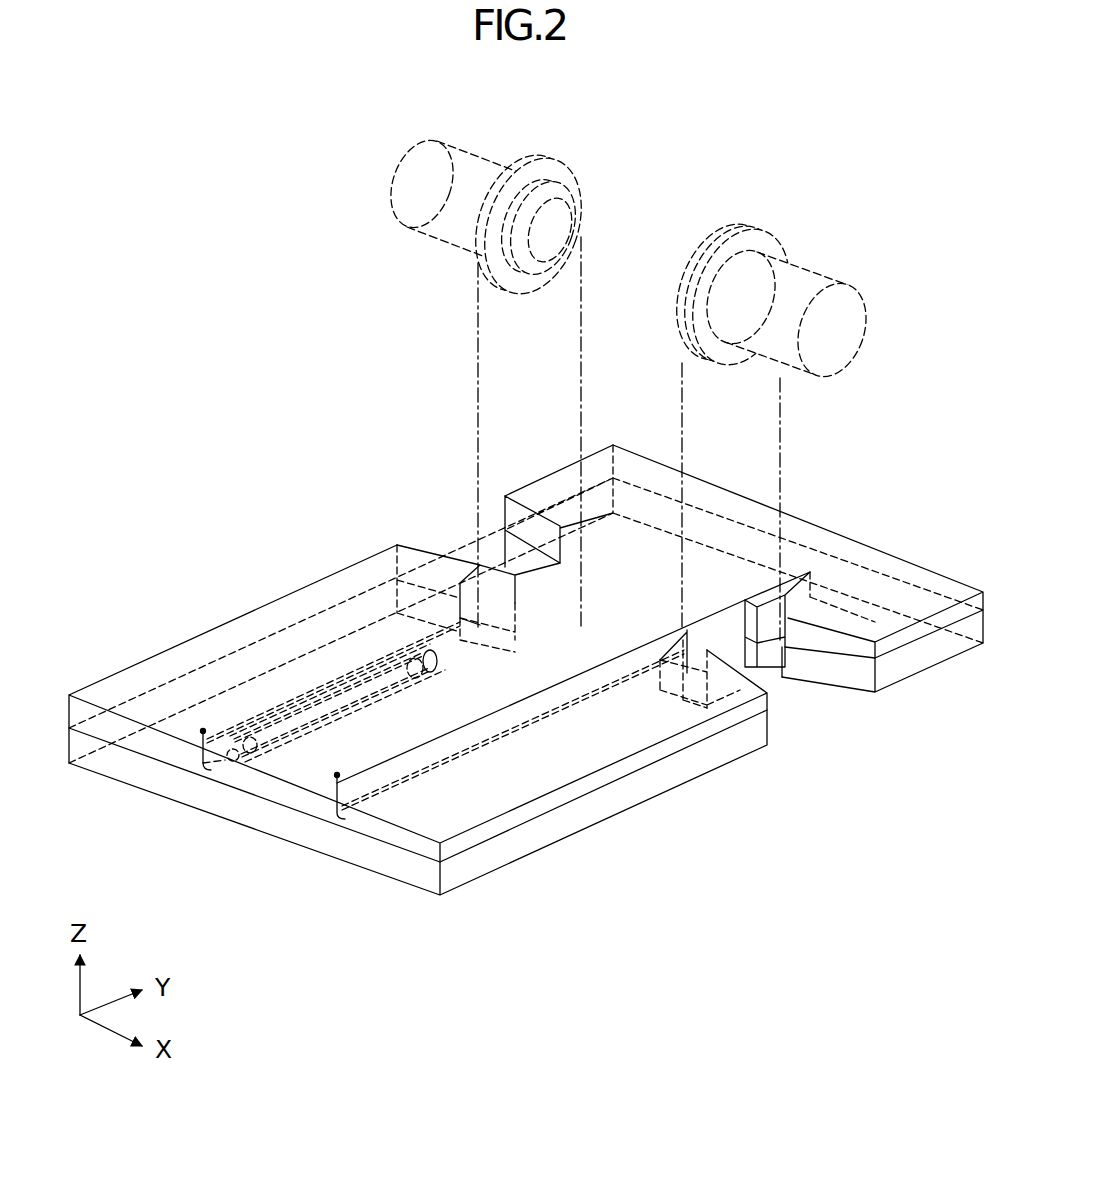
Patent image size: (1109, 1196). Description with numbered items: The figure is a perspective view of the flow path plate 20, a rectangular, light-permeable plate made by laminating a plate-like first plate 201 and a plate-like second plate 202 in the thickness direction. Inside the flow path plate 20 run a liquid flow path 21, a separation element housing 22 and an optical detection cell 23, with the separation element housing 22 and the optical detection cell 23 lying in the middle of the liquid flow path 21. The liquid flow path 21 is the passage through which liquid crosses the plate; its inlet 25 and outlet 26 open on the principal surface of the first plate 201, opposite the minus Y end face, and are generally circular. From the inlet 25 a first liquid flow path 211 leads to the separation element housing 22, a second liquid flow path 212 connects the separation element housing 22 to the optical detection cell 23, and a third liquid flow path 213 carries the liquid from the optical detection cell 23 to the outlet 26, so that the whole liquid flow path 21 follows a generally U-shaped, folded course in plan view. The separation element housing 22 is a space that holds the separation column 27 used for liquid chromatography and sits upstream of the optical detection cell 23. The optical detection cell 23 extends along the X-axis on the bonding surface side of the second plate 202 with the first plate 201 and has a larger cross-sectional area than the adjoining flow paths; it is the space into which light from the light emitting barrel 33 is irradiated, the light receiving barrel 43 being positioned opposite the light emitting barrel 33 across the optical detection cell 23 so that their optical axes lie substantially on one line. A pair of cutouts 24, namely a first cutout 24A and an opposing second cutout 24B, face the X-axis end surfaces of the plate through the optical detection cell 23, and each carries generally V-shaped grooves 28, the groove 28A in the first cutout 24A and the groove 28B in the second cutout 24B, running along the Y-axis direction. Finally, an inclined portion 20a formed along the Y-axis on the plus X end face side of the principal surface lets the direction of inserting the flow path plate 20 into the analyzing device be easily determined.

The flow path plate 20 is at (320, 425).
The inclined portion 20a is at (458, 822).
The first plate 201 is at (568, 792).
The second plate 202 is at (565, 823).
The liquid flow path 21 is at (457, 656).
The first liquid flow path 211 is at (217, 730).
The second liquid flow path 212 is at (440, 642).
The third liquid flow path 213 is at (600, 695).
The separation element housing 22 is at (315, 697).
The optical detection cell 23 is at (617, 630).
The pair of cutouts 24 is at (657, 593).
The first cutout 24A is at (507, 515).
The second cutout 24B is at (827, 665).
The inlet 25 is at (200, 733).
The outlet 26 is at (333, 776).
The separation column 27 is at (280, 737).
The grooves 28 is at (659, 573).
The groove 28A is at (482, 565).
The groove 28B is at (782, 612).
The light emitting barrel 33 is at (467, 155).
The light receiving barrel 43 is at (805, 275).